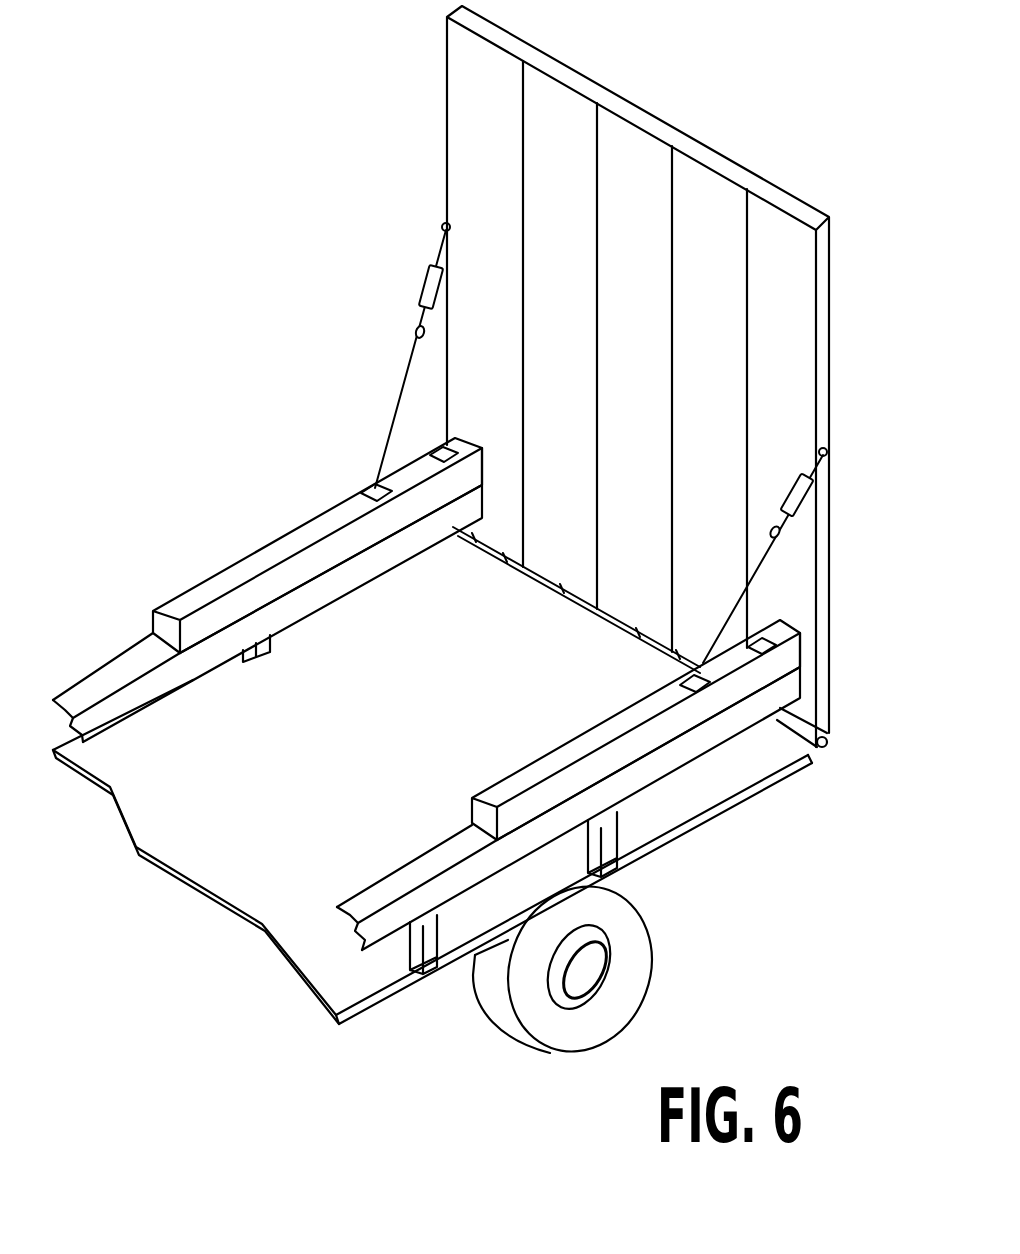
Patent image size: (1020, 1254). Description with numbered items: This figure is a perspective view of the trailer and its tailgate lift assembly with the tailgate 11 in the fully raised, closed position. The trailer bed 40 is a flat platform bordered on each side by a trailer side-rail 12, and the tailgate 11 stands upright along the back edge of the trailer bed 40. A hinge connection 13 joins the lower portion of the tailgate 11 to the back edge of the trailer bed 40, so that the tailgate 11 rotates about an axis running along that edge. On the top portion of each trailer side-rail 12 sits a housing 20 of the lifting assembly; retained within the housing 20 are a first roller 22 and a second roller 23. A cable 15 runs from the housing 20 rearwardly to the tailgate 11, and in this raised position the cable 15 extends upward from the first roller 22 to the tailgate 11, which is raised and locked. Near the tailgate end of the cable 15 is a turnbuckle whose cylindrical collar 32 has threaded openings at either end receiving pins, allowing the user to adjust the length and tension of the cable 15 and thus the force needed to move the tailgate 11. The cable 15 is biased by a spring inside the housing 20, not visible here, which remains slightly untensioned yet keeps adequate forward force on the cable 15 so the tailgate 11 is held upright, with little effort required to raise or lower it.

The tailgate 11 is at (647, 155).
The trailer side-rail 12 is at (113, 672).
The hinge connection 13 is at (833, 740).
The cable 15 is at (400, 400).
The housing 20 is at (245, 567).
The first roller 22 is at (375, 486).
The second roller 23 is at (443, 457).
The cylindrical collar 32 is at (420, 290).
The trailer bed 40 is at (287, 775).